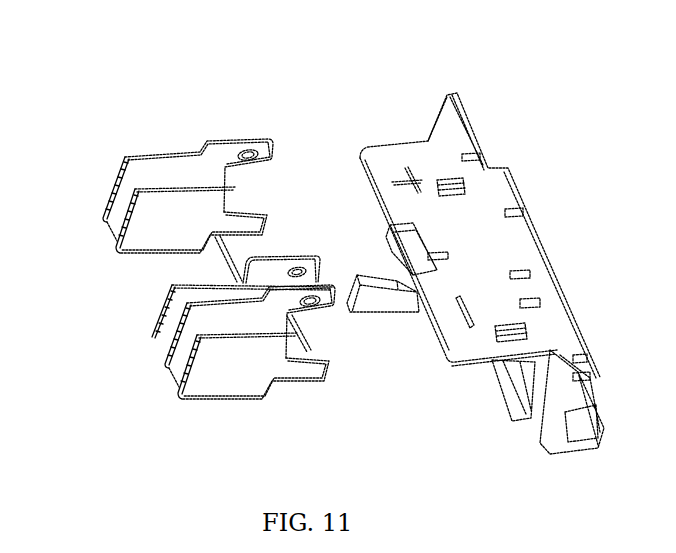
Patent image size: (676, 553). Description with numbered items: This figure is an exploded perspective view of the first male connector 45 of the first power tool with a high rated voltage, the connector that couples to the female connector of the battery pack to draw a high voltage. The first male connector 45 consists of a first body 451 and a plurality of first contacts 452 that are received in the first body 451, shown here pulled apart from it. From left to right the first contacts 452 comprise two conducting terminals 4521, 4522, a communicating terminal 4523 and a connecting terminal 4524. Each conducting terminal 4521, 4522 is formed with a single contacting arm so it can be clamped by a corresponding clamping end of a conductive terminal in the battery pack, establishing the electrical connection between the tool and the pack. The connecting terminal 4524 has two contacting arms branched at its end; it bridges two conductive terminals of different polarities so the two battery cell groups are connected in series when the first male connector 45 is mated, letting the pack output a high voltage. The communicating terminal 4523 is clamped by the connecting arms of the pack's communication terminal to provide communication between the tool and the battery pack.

The first male connector 45 is at (90, 54).
The first body 451 is at (395, 157).
The first contacts 452 is at (157, 148).
The conducting terminal 4521 is at (107, 193).
The conducting terminal 4522 is at (168, 357).
The communicating terminal 4523 is at (155, 322).
The connecting terminal 4524 is at (153, 232).